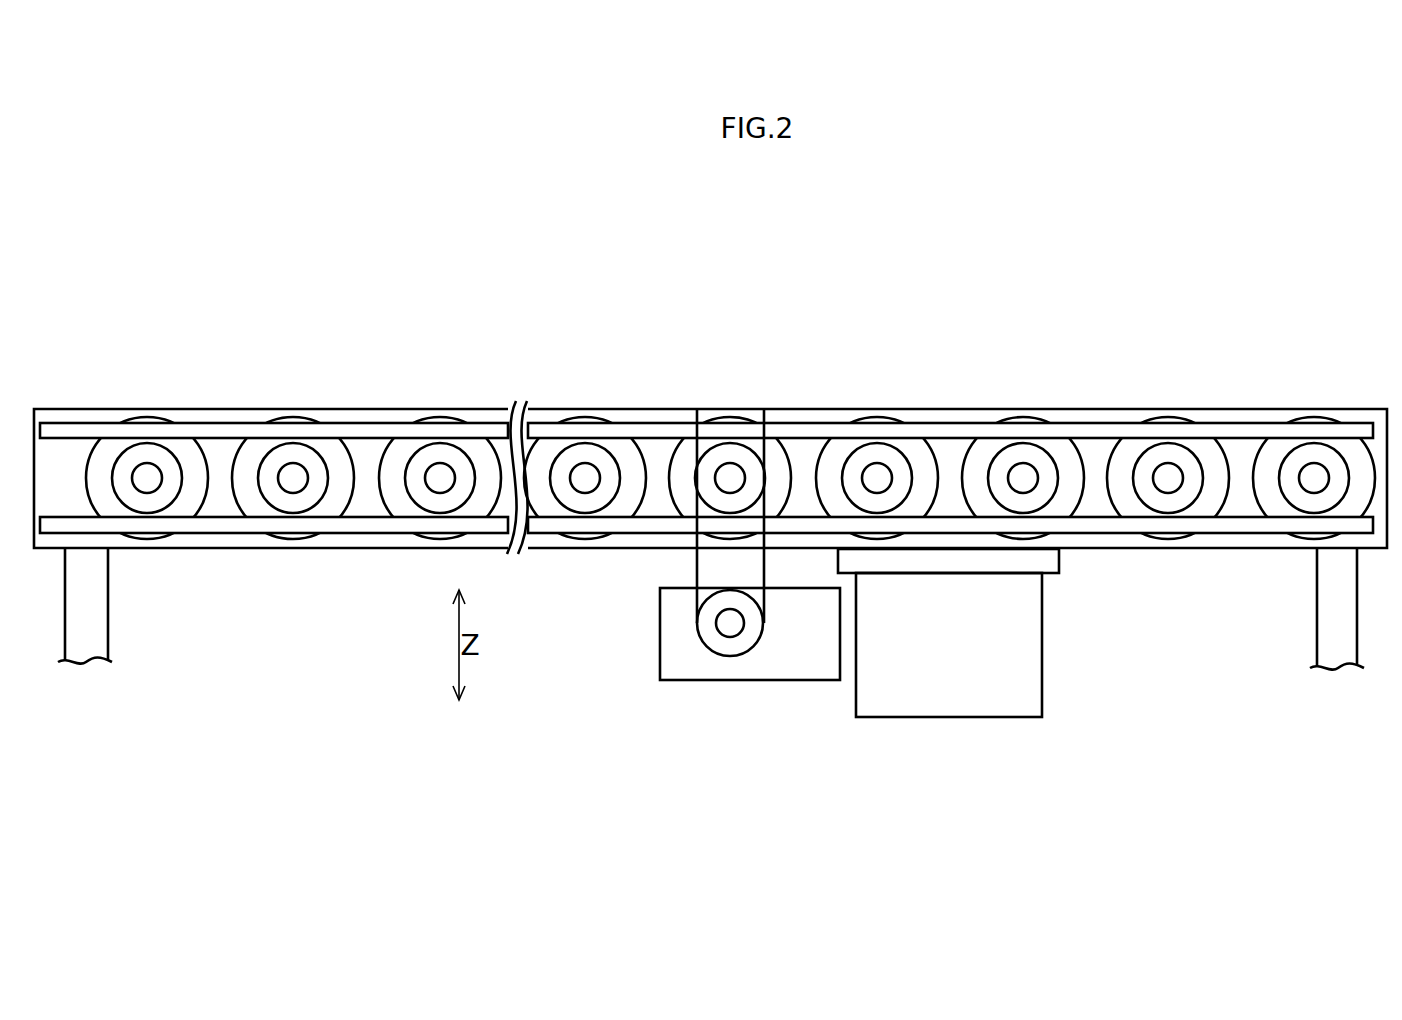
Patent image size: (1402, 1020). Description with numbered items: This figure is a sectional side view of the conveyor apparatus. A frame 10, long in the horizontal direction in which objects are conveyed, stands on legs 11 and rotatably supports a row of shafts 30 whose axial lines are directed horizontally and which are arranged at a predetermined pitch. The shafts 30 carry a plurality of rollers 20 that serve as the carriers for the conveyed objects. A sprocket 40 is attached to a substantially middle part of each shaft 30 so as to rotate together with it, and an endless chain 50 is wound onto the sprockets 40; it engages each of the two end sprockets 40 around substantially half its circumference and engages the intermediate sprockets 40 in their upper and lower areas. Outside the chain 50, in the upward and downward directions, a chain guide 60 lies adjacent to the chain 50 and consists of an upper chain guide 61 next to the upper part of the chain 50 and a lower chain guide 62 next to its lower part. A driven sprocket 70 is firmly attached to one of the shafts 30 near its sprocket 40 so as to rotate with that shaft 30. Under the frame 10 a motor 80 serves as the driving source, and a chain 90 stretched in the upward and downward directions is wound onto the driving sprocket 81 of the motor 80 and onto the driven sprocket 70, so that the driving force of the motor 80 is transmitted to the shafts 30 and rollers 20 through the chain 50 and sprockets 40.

The frame 10 is at (646, 409).
The legs 11 is at (108, 640).
The rollers 20 is at (147, 417).
The shafts 30 is at (147, 480).
The sprockets 40 is at (175, 462).
The endless chain 50 is at (955, 430).
The chain guide 60 is at (706, 467).
The upper chain guide 61 is at (815, 424).
The lower chain guide 62 is at (540, 534).
The driven sprocket 70 is at (716, 410).
The motor 80 is at (783, 668).
The driving sprocket 81 is at (712, 647).
The chain 90 is at (697, 562).